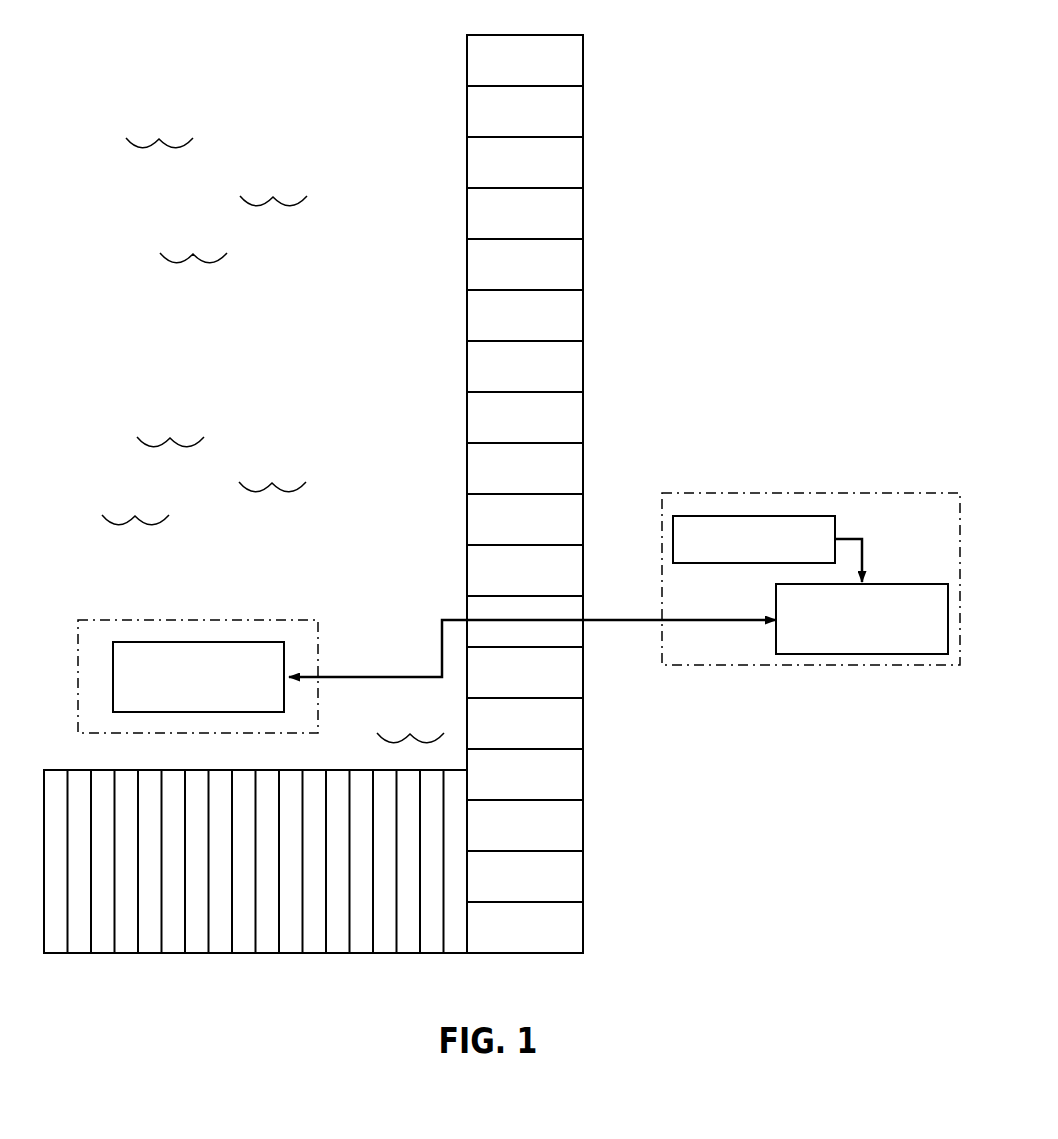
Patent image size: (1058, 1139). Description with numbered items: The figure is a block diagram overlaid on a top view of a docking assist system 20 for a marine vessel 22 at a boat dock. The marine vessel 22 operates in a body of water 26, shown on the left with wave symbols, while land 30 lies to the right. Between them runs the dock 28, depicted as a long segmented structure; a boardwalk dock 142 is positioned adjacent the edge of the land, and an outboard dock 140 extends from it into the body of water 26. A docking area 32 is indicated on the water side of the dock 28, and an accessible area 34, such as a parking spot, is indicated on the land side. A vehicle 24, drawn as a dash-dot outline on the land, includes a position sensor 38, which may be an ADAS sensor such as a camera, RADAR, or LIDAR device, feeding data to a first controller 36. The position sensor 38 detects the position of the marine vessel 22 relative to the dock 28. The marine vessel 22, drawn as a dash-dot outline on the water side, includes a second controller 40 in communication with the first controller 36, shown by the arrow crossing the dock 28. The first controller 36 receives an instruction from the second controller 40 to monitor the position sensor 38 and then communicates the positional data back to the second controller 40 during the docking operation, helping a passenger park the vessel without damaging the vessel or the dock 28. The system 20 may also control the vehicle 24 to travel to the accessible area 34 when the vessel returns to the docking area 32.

The docking assist system 20 is at (640, 136).
The marine vessel 22 is at (194, 620).
The vehicle 24 is at (848, 494).
The body of water 26 is at (273, 440).
The dock 28 is at (592, 923).
The land 30 is at (780, 283).
The docking area 32 is at (367, 546).
The accessible area 34 is at (635, 523).
The first controller 36 is at (862, 619).
The position sensor 38 is at (718, 516).
The second controller 40 is at (198, 677).
The outboard dock 140 is at (195, 952).
The boardwalk dock 142 is at (583, 773).